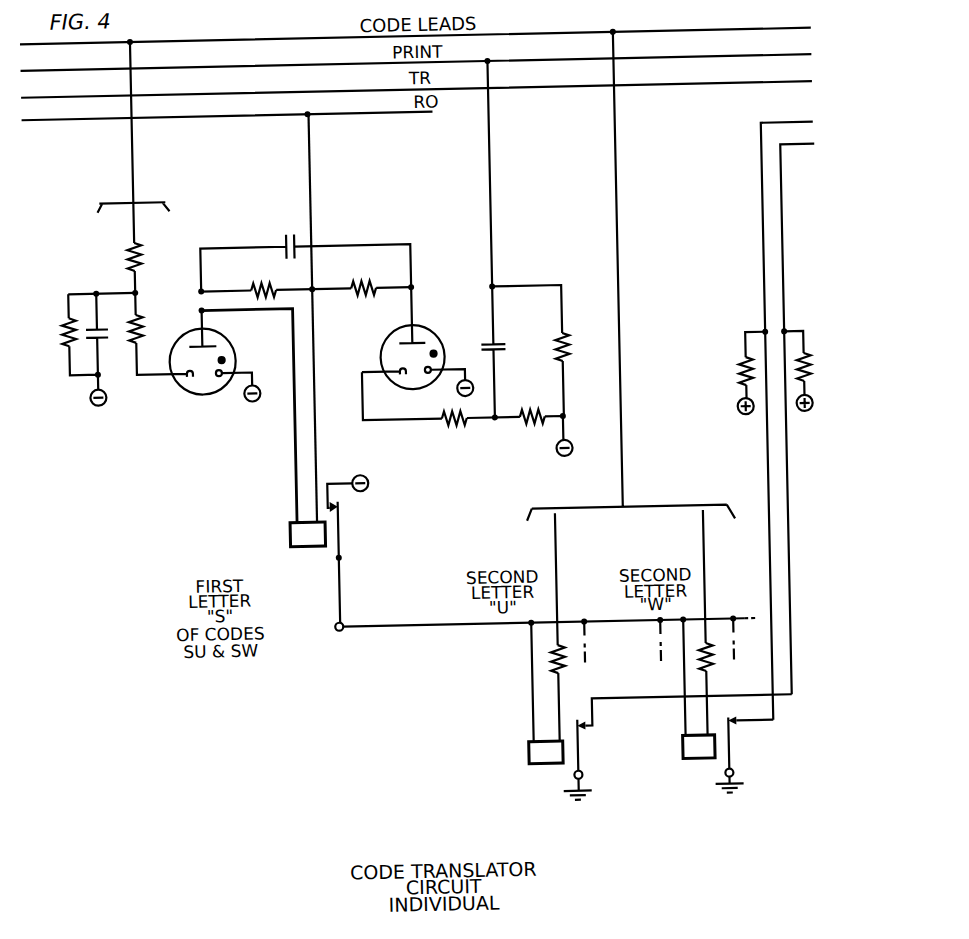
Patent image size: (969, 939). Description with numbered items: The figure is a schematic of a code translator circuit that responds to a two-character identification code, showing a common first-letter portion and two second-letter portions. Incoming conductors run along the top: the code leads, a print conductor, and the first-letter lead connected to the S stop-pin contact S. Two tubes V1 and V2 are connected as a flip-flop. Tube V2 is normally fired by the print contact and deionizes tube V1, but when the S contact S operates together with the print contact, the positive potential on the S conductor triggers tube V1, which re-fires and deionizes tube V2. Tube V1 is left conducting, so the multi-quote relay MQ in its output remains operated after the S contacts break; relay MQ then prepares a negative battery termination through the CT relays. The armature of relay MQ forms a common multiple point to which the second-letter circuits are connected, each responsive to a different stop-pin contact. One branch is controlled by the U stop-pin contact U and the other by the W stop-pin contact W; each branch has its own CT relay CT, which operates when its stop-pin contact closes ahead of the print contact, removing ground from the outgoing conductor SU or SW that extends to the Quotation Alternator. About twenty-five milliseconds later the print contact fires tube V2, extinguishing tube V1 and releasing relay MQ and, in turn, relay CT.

The first flip-flop tube V1 is at (202, 352).
The second flip-flop tube V2 is at (417, 338).
The multi-quote relay MQ is at (307, 534).
The code translator relay CT is at (622, 749).
The S stop-pin contact S is at (133, 212).
The U stop-pin contact U is at (561, 627).
The W stop-pin contact W is at (713, 622).
The SW code outgoing conductor SW is at (792, 413).
The SU code outgoing conductor SU is at (803, 411).